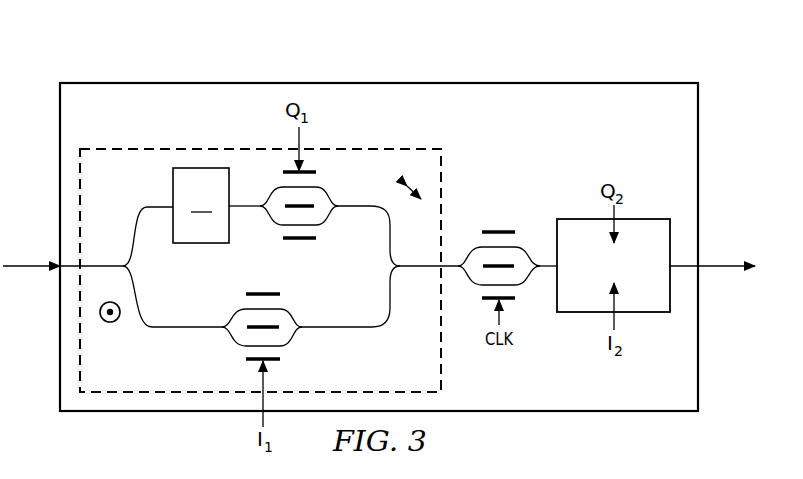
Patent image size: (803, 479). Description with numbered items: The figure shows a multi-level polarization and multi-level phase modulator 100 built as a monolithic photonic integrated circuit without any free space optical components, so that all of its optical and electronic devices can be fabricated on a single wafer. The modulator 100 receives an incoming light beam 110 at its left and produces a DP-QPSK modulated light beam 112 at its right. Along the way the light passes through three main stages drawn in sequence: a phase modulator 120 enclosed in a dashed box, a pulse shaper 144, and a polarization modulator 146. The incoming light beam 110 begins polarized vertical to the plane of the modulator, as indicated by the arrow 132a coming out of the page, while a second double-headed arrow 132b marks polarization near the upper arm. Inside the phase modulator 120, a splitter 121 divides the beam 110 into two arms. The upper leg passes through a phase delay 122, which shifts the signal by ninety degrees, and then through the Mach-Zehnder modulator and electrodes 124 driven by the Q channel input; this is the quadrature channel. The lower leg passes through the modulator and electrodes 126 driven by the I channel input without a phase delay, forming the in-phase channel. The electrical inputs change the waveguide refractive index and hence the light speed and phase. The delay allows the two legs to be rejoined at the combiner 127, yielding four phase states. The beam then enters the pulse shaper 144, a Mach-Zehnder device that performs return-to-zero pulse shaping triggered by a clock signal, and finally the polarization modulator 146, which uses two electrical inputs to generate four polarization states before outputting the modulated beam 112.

The multi-level polarization and multi-level phase modulator 100 is at (503, 80).
The incoming light beam 110 is at (27, 262).
The DP-QPSK modulated light beam 112 is at (722, 262).
The phase modulator 120 is at (222, 146).
The splitter 121 is at (127, 262).
The phase delay 122 is at (172, 192).
The modulator 124 is at (335, 198).
The modulator 126 is at (297, 331).
The combiner 127 is at (398, 272).
The arrow 132a is at (113, 323).
The arrow 132b is at (415, 190).
The pulse shaper 144 is at (529, 250).
The polarization modulator 146 is at (631, 275).